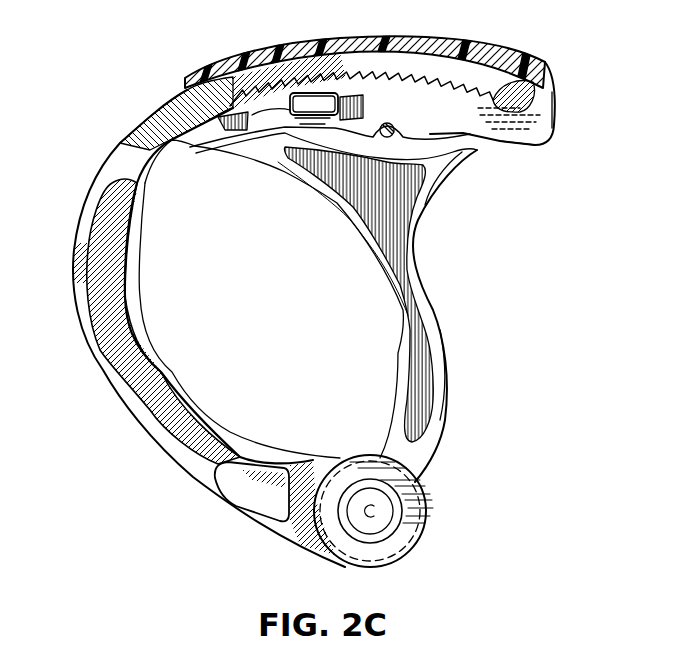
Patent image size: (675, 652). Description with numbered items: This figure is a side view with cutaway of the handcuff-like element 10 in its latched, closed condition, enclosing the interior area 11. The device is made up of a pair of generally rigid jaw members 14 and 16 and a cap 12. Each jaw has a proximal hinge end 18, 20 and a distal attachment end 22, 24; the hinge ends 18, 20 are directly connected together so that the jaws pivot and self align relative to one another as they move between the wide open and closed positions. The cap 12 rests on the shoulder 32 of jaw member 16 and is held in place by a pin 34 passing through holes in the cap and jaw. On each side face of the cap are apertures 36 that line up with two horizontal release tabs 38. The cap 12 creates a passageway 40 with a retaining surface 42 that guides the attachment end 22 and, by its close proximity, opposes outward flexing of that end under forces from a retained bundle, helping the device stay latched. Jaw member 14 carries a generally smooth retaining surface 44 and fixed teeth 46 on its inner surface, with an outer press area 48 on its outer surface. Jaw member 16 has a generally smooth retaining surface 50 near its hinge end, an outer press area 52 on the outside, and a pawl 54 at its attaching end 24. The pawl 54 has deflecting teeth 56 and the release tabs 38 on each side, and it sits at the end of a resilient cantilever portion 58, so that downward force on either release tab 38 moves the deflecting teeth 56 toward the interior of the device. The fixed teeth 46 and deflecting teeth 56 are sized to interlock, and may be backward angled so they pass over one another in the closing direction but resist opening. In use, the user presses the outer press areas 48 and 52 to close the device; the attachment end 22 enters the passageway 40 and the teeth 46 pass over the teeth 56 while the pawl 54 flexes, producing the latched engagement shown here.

The handcuff-like element 10 is at (97, 92).
The interior area 11 is at (271, 299).
The cap 12 is at (494, 50).
The jaw member 14 is at (97, 384).
The jaw member 16 is at (448, 292).
The proximal hinge end 18 is at (318, 560).
The proximal hinge end 20 is at (408, 560).
The distal attachment end 22 is at (463, 58).
The distal attachment end 24 is at (518, 146).
The shoulder 32 is at (505, 98).
The pin 34 is at (389, 123).
The apertures 36 is at (325, 118).
The release tabs 38 is at (332, 82).
The passageway 40 is at (552, 108).
The retaining surface 42 is at (185, 97).
The retaining surface 44 is at (141, 298).
The fixed teeth 46 is at (360, 102).
The outer press area 48 is at (72, 298).
The retaining surface 50 is at (397, 353).
The outer press area 52 is at (445, 353).
The pawl 54 is at (265, 136).
The deflecting teeth 56 is at (323, 92).
The resilient cantilever portion 58 is at (262, 100).